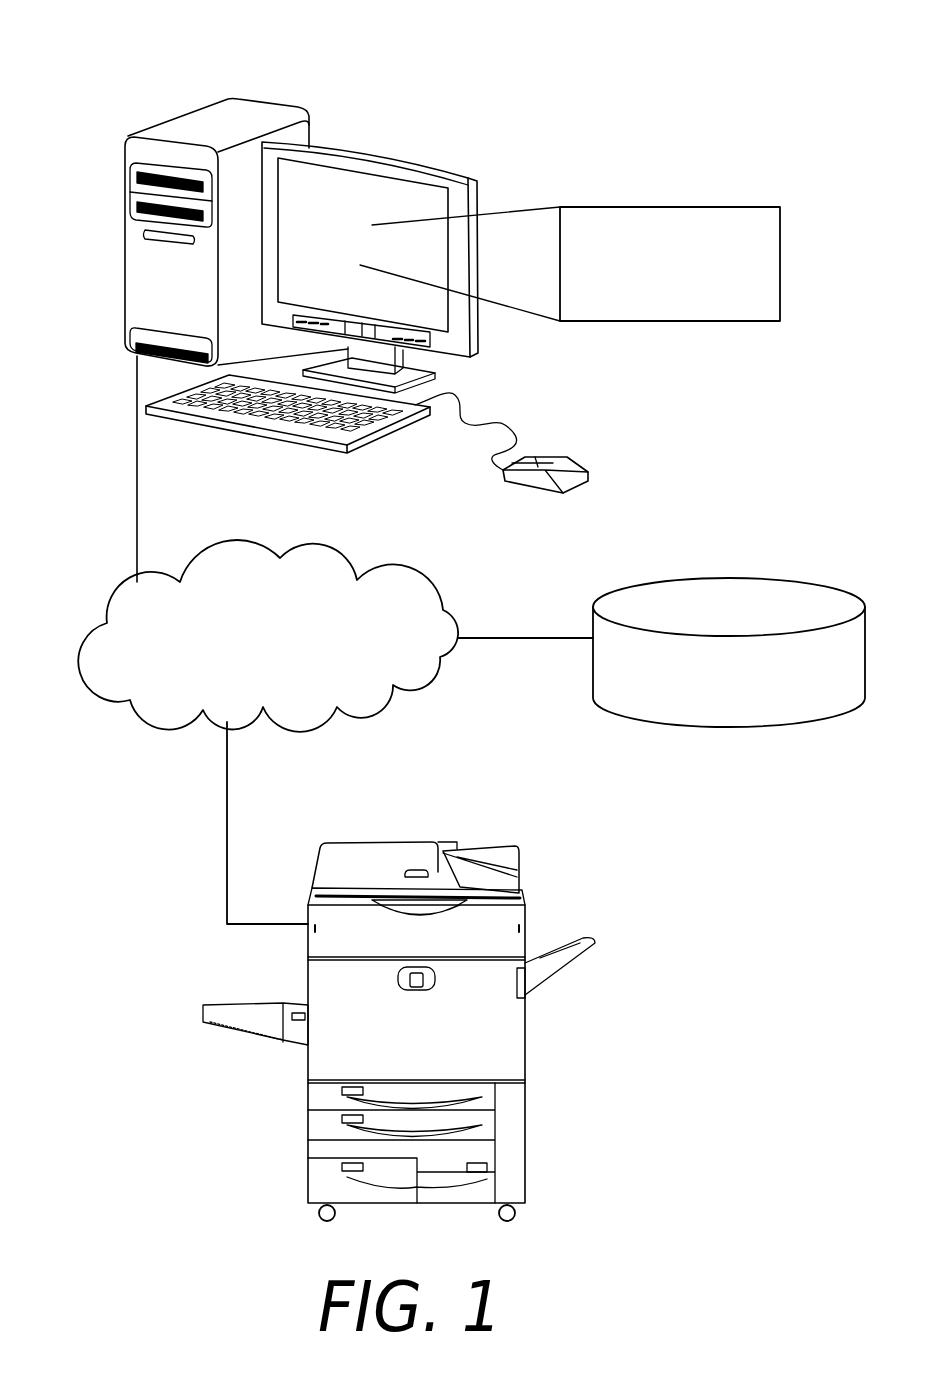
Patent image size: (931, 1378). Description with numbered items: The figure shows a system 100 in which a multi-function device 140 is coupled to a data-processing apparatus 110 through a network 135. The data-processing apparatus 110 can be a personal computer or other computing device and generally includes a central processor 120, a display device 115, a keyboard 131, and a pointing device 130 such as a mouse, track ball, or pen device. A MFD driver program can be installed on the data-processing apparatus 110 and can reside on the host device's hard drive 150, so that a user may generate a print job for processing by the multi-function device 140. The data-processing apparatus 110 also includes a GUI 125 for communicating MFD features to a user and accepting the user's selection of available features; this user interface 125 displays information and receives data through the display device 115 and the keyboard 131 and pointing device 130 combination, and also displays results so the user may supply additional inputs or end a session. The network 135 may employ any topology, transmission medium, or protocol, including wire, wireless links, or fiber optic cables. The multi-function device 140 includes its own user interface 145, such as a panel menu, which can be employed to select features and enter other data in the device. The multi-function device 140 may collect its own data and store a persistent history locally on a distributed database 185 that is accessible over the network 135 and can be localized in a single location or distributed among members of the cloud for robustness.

The system 100 is at (599, 64).
The data-processing apparatus 110 is at (400, 197).
The display device 115 is at (373, 147).
The central processor 120 is at (131, 353).
The GUI 125 is at (705, 207).
The pointing device 130 is at (560, 455).
The keyboard 131 is at (247, 426).
The network 135 is at (310, 552).
The multi-function device 140 is at (364, 842).
The user interface 145 is at (522, 885).
The hard drive 150 is at (174, 114).
The distributed database 185 is at (788, 577).